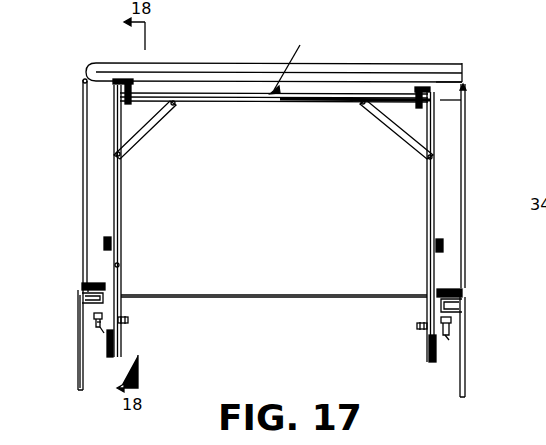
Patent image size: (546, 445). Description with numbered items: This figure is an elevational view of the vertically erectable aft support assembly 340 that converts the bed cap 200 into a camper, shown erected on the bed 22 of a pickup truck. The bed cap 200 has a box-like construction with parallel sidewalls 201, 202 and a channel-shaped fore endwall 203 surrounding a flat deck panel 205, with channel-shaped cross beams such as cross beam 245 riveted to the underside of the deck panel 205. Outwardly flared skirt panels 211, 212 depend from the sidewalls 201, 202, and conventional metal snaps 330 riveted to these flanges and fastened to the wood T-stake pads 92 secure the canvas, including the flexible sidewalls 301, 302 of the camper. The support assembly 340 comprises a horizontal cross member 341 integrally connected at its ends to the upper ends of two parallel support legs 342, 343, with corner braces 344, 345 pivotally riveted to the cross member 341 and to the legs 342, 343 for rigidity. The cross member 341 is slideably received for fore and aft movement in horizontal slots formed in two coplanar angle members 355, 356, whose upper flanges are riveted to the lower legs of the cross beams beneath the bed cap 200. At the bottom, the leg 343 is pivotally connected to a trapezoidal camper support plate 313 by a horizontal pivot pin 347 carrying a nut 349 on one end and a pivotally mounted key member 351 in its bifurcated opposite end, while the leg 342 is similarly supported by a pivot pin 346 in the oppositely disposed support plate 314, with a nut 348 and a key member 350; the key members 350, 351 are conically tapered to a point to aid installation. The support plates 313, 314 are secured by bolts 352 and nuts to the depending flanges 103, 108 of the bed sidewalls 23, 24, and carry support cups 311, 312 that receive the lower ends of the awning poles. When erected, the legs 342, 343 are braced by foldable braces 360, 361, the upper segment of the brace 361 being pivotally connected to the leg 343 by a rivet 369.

The bed 22 is at (68, 374).
The lateral sidewall 23 is at (78, 352).
The lateral sidewall 24 is at (465, 372).
The pad 92 is at (94, 285).
The flange 103 is at (96, 298).
The flange 108 is at (462, 299).
The bed cap 200 is at (470, 61).
The sidewall 201 is at (86, 64).
The sidewall 202 is at (466, 72).
The fore endwall 203 is at (291, 209).
The deck panel 205 is at (192, 63).
The skirt panel 211 is at (84, 82).
The skirt panel 212 is at (467, 88).
The cross beam 245 is at (362, 82).
The flexible sidewall 301 is at (83, 143).
The flexible sidewall 302 is at (465, 148).
The support cup 311 is at (120, 339).
The support cup 312 is at (430, 345).
The camper support plate 313 is at (94, 317).
The camper support plate 314 is at (451, 320).
The snap 330 is at (462, 100).
The support assembly 340 is at (299, 59).
The cross member 341 is at (283, 102).
The support leg 342 is at (427, 210).
The support leg 343 is at (121, 205).
The corner brace 344 is at (392, 122).
The corner brace 345 is at (148, 128).
The pivot pin 346 is at (450, 330).
The pivot pin 347 is at (100, 334).
The nut 348 is at (422, 323).
The nut 349 is at (125, 320).
The key member 350 is at (447, 338).
The key member 351 is at (97, 328).
The bolt 352 is at (79, 290).
The angle member 355 is at (118, 79).
The angle member 356 is at (417, 88).
The foldable brace 360 is at (439, 253).
The foldable brace 361 is at (106, 247).
The rivet 369 is at (121, 240).